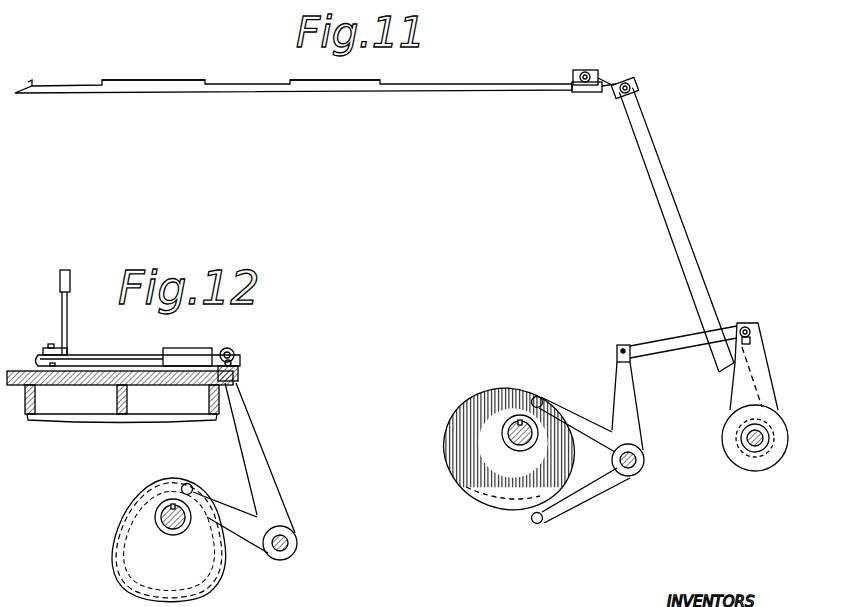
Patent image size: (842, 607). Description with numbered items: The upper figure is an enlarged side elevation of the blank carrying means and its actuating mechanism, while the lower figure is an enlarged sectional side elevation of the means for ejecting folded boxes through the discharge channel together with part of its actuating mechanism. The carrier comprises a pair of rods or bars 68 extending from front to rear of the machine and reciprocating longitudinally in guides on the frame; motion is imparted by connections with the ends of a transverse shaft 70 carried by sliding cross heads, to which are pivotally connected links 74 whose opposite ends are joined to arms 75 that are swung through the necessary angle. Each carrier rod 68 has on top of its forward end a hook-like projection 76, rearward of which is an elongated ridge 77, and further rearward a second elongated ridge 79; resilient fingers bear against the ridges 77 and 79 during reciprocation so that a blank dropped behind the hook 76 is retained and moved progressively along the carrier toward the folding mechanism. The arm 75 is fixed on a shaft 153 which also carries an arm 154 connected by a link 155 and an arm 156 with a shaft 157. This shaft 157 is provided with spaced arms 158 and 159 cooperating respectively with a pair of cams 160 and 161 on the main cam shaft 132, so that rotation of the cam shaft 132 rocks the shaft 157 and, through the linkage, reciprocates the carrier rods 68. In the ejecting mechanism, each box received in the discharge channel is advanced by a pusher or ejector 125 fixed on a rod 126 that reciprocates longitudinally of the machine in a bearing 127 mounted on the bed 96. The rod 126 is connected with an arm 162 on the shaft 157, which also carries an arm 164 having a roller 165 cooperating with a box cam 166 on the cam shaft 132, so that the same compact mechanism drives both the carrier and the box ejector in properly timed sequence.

In FIG. 11, the carrier rods 68 is at (88, 92).
In FIG. 11, the hook-like projection 76 is at (33, 80).
In FIG. 11, the elongated projecting portion or ridge 77 is at (162, 80).
In FIG. 11, the second elongated projection or ridge 79 is at (336, 86).
In FIG. 11, the transverse shaft 70 is at (592, 74).
In FIG. 11, the links 74 is at (634, 88).
In FIG. 11, the arms 75 is at (655, 168).
In FIG. 11, the link 155 is at (668, 328).
In FIG. 11, the arm 154 is at (758, 348).
In FIG. 11, the shaft 153 is at (752, 441).
In FIG. 11, the arm 156 is at (630, 384).
In FIG. 11, the shaft 157 is at (636, 464).
In FIG. 12, the shaft 157 is at (288, 545).
In FIG. 11, the arm 158 is at (570, 384).
In FIG. 11, the arm 159 is at (606, 478).
In FIG. 11, the cam 161 is at (517, 505).
In FIG. 11, the cam 160 is at (488, 373).
In FIG. 11, the main cam shaft 132 is at (514, 438).
In FIG. 12, the main cam shaft 132 is at (171, 522).
In FIG. 12, the pusher or ejector 125 is at (69, 322).
In FIG. 12, the rod 126 is at (100, 353).
In FIG. 12, the bearing 127 is at (183, 343).
In FIG. 12, the bed 96 is at (71, 376).
In FIG. 12, the arm 162 is at (258, 441).
In FIG. 12, the arm 164 is at (245, 528).
In FIG. 12, the roller 165 is at (186, 482).
In FIG. 12, the box cam 166 is at (116, 556).